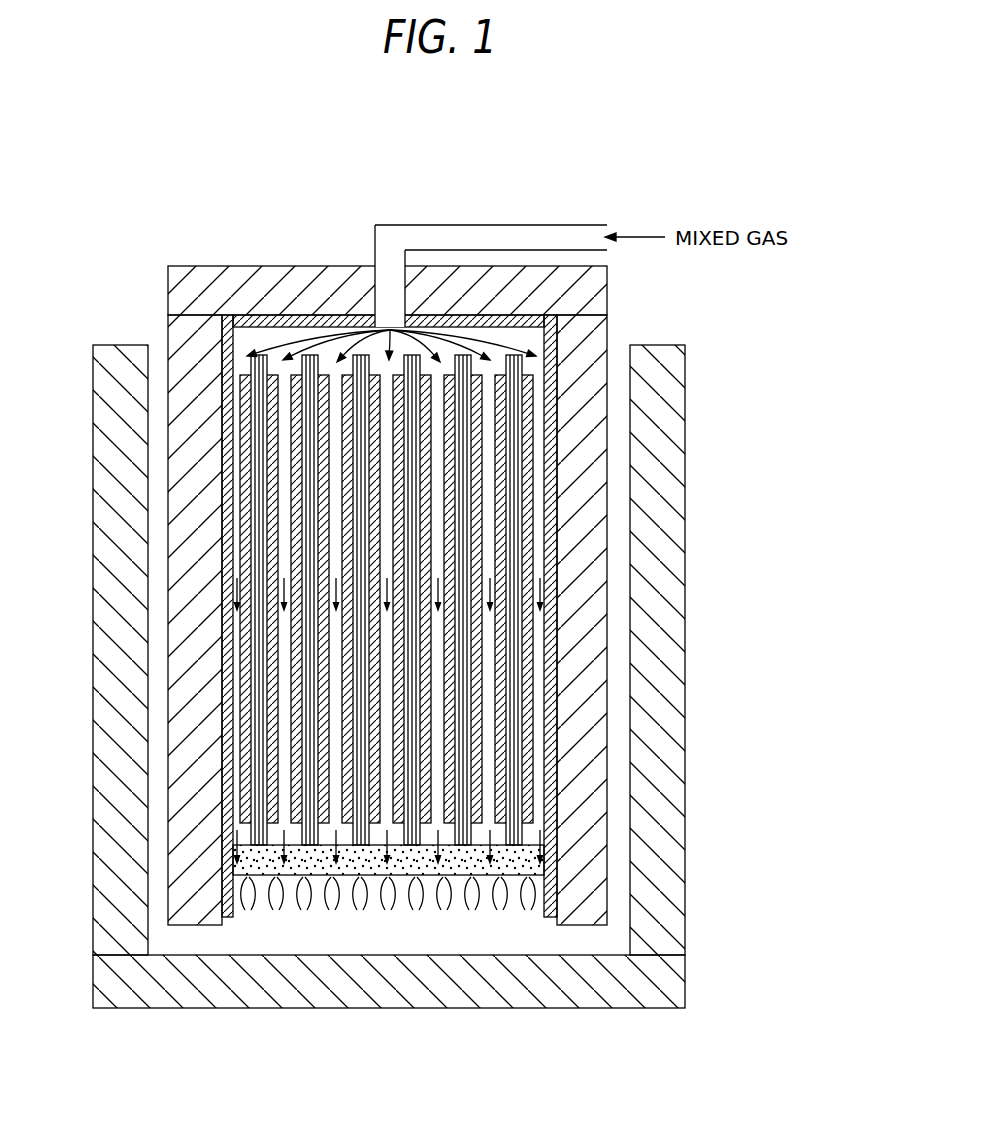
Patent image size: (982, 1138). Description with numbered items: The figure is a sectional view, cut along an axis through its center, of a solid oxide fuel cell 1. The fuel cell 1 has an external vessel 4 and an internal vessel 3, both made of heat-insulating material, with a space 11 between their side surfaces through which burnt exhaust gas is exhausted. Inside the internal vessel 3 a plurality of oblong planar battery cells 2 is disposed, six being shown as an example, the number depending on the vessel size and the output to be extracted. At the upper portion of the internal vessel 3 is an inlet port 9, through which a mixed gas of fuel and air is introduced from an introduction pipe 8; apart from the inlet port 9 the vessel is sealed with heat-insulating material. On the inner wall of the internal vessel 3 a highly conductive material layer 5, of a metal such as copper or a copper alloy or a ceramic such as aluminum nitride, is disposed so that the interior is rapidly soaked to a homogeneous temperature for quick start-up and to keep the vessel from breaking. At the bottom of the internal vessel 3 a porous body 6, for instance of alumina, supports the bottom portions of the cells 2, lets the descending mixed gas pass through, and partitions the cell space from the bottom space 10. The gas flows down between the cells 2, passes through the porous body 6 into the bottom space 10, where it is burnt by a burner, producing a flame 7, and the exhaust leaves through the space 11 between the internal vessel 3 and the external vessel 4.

The solid oxide fuel cell 1 is at (427, 609).
The battery cell 2 is at (525, 370).
The internal vessel 3 is at (253, 266).
The external vessel 4 is at (120, 346).
The highly conductive material layer 5 is at (550, 462).
The porous body 6 is at (523, 858).
The flame 7 is at (535, 898).
The introduction pipe 8 is at (564, 225).
The inlet port 9 is at (389, 280).
The bottom space 10 is at (385, 943).
The space between side surfaces 11 is at (620, 603).